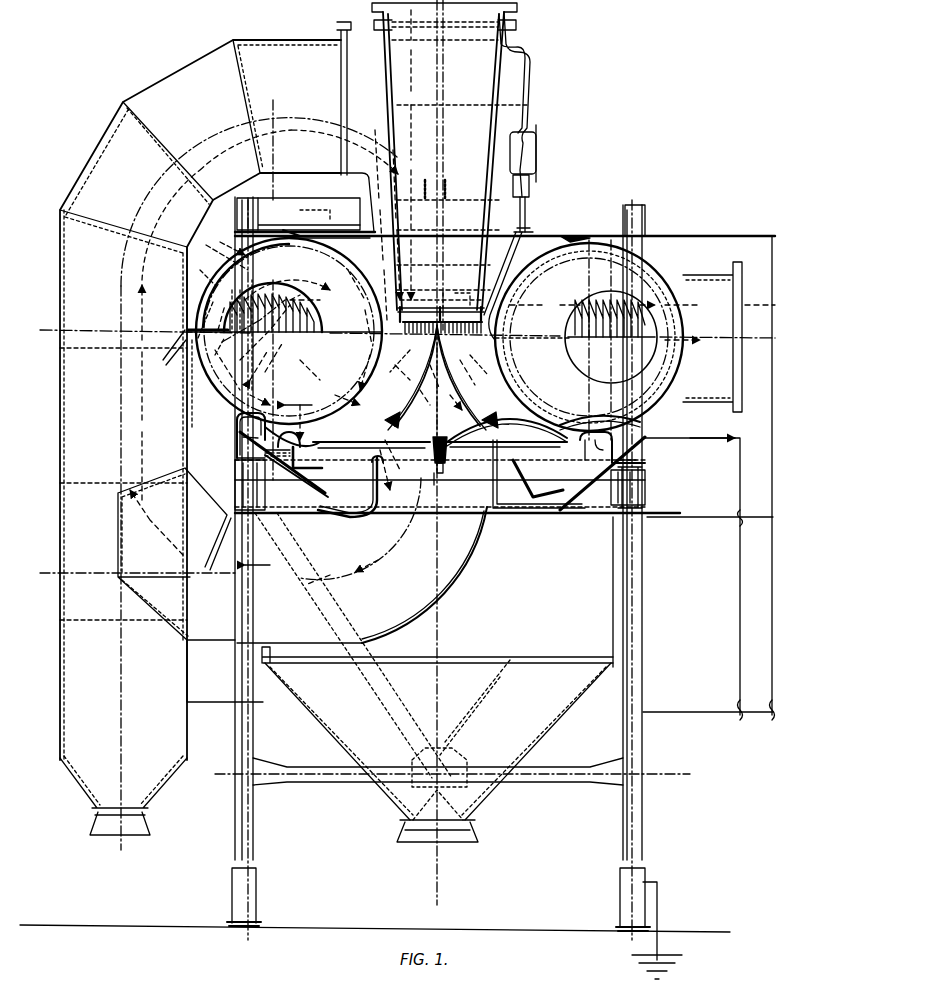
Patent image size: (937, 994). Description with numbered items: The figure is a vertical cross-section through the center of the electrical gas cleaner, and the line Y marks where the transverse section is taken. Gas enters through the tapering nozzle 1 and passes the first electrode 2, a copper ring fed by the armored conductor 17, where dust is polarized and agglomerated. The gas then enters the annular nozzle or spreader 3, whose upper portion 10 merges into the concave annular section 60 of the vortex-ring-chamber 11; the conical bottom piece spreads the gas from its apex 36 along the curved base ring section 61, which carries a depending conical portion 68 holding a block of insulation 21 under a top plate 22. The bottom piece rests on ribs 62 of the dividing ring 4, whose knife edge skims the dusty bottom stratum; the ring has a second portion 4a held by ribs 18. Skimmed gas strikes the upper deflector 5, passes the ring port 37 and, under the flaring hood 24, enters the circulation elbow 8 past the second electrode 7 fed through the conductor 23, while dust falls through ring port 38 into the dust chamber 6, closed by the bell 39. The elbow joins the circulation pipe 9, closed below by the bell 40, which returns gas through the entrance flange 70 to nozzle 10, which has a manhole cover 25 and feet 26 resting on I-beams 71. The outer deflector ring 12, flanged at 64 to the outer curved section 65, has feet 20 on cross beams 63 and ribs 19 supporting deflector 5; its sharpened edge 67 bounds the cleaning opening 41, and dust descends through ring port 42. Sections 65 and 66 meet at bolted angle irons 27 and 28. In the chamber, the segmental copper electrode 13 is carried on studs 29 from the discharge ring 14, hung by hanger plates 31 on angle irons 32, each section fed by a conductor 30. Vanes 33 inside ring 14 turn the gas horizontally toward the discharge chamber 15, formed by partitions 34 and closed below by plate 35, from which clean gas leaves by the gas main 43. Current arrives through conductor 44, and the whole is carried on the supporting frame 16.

The nozzle 1 is at (490, 16).
The electrode 2 is at (463, 304).
The annular nozzle or spreader 3 is at (441, 380).
The dividing ring 4 is at (706, 462).
The annular portion of dividing ring 4a is at (620, 445).
The upper deflector 5 is at (320, 460).
The dust chamber 6 is at (593, 613).
The electrode 7 is at (447, 470).
The circulation elbow 8 is at (478, 574).
The circulation pipe 9 is at (72, 388).
The circulation nozzle 10 is at (532, 63).
The vortex-ring-chamber 11 is at (439, 334).
The deflector ring 12 is at (340, 520).
The segmental ring of copper 13 is at (221, 353).
The discharge ring 14 is at (232, 308).
The discharge chamber 15 is at (576, 337).
The supporting frame 16 is at (650, 572).
The armored conductor 17 is at (652, 234).
The ribs 18 is at (240, 455).
The ribs 19 is at (350, 510).
The feet 20 is at (640, 455).
The block of insulation 21 is at (394, 465).
The top plate 22 is at (440, 436).
The conductor 23 is at (652, 514).
The flaring hood 24 is at (355, 478).
The cover 25 is at (538, 142).
The feet 26 is at (532, 188).
The angle iron 27 is at (292, 230).
The angle iron 28 is at (298, 235).
The studs 29 is at (201, 289).
The conductor 30 is at (166, 358).
The hanger plates 31 is at (305, 263).
The angle irons 32 is at (246, 279).
The vanes 33 is at (270, 310).
The partitions 34 is at (589, 340).
The plate 35 is at (605, 418).
The apex 36 is at (428, 306).
The ring port 37 is at (350, 452).
The ring port 38 is at (269, 585).
The bell 39 is at (440, 815).
The bell 40 is at (120, 810).
The annular cleaning opening 41 is at (267, 337).
The ring port 42 is at (530, 500).
The gas main 43 is at (720, 337).
The conductor 44 is at (675, 432).
The annular section 60 is at (495, 358).
The base ring section 61 is at (512, 400).
The ribs 62 is at (570, 450).
The cross beams 63 is at (640, 487).
The flange 64 is at (237, 422).
The outer curved section 65 is at (201, 366).
The section 66 is at (289, 329).
The sharpened edge 67 is at (243, 438).
The conical portion 68 is at (507, 447).
The entrance flange 70 is at (348, 32).
The I-beams 71 is at (526, 218).
The line y—y Y is at (402, 333).